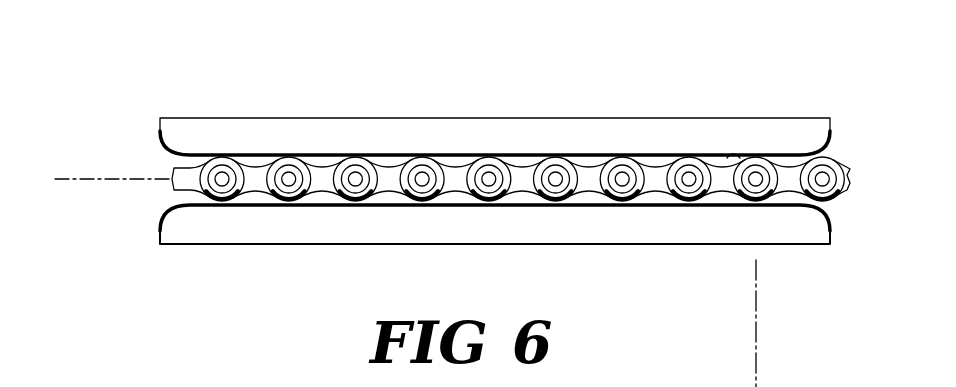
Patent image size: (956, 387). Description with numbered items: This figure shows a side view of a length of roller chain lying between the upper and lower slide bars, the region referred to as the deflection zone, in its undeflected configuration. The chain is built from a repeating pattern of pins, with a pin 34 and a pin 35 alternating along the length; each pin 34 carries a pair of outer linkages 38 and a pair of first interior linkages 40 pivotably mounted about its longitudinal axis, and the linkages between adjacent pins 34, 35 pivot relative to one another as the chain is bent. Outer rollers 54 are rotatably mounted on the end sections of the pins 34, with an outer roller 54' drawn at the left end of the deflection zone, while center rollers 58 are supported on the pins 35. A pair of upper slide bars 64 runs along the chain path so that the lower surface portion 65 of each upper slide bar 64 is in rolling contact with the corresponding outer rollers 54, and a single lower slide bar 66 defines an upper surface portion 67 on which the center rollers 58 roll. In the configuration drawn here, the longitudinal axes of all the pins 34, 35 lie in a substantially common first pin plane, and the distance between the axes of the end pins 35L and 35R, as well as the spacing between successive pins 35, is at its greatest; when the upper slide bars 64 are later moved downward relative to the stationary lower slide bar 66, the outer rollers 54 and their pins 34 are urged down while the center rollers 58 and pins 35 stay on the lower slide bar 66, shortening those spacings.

The pin 34 is at (422, 179).
The pin 35 is at (489, 179).
The pin 35L is at (222, 179).
The pin 35R is at (758, 179).
The outer linkage 38 is at (589, 168).
The first interior linkage 40 is at (393, 189).
The outer roller 54 is at (506, 244).
The first lower plate segment 54' is at (273, 239).
The center roller 58 is at (488, 203).
The upper slide bar 64 is at (615, 118).
The lower surface portion 65 is at (735, 158).
The lower slide bar 66 is at (702, 244).
The upper surface portion 67 is at (732, 195).